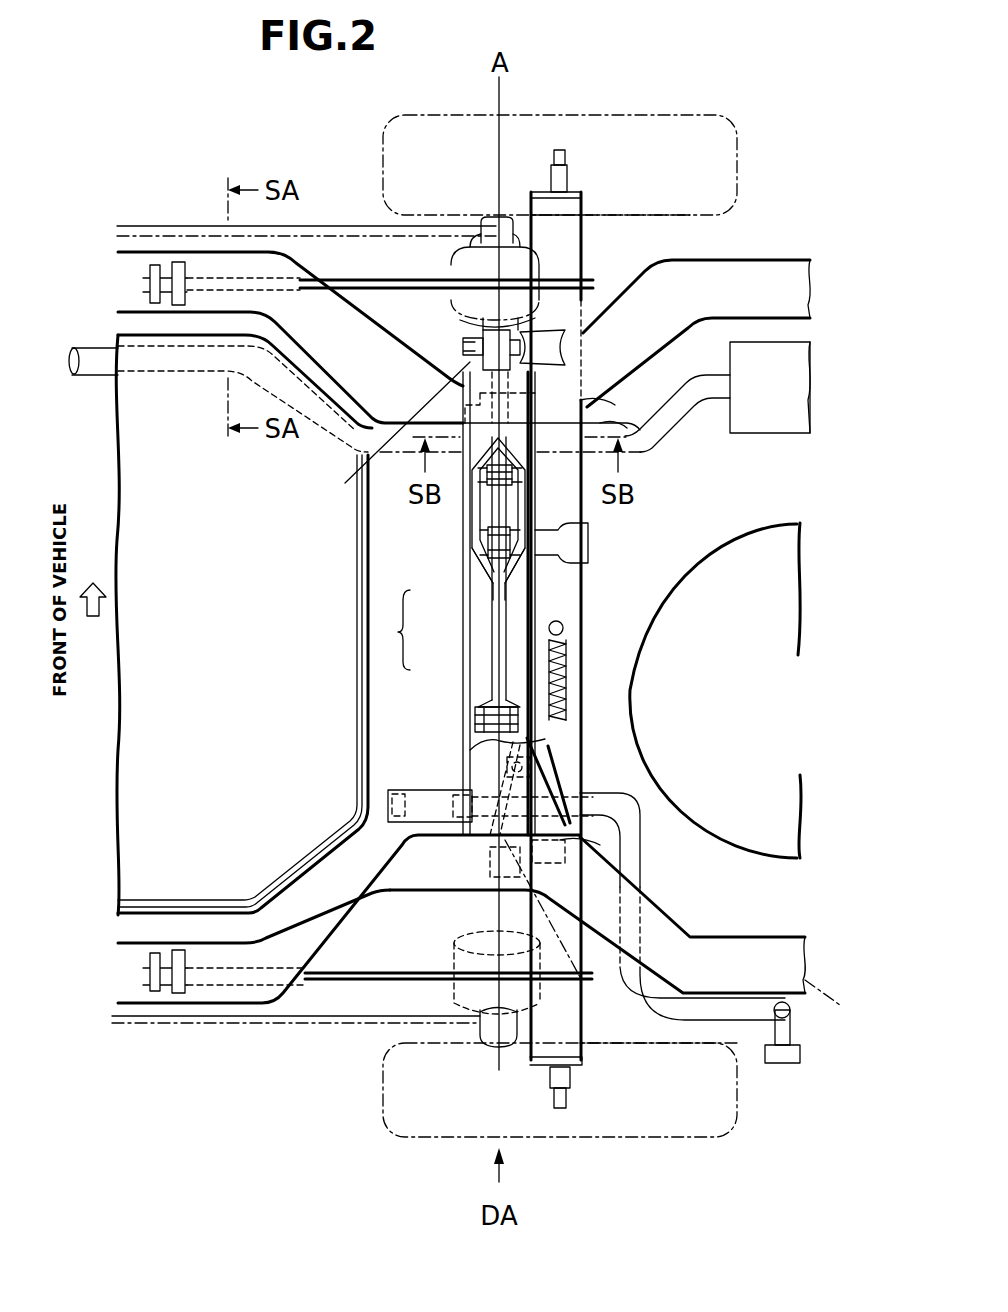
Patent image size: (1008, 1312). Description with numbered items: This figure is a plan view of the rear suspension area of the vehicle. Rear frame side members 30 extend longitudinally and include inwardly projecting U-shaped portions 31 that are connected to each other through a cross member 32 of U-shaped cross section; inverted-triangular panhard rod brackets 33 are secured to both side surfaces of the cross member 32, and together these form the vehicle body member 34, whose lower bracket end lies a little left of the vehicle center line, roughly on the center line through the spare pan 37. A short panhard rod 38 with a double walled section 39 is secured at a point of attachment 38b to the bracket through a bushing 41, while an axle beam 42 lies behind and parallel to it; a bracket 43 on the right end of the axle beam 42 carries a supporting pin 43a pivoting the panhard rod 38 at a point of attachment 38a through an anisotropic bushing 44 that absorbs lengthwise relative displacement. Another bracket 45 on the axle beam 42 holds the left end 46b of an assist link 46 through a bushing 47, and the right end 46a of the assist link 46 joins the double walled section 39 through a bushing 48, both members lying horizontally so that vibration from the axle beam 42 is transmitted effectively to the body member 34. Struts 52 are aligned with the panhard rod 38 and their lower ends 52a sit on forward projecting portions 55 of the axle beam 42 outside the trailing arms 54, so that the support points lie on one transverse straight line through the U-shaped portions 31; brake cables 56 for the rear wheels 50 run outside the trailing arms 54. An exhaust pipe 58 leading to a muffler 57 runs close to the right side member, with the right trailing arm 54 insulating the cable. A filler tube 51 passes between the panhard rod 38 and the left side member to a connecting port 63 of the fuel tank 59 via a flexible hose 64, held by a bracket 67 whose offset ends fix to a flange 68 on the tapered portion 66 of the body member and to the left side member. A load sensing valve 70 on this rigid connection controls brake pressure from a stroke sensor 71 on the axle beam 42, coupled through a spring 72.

The rear frame side member 30 is at (782, 260).
The U-shaped portion 31 is at (600, 403).
The cross member 32 is at (463, 640).
The panhard rod bracket 33 is at (463, 598).
The vehicle body member 34 is at (451, 521).
The spare pan 37 is at (727, 543).
The panhard rod 38 is at (488, 673).
The point of attachment to the axle beam 38a is at (480, 321).
The point of attachment 38b is at (478, 753).
The double walled section 39 is at (480, 546).
The bushing 41 is at (470, 726).
The axle beam 42 is at (584, 671).
The bracket 43 is at (590, 330).
The supporting pin 43a is at (462, 346).
The anisotropic bushing 44 is at (389, 437).
The bracket 45 is at (523, 536).
The assist link 46 is at (476, 518).
The right end of the assist link 46a is at (635, 440).
The left end of the assist link 46b is at (513, 566).
The bushing 47 is at (582, 543).
The bushing 48 is at (540, 483).
The rear wheel 50 is at (383, 150).
The filler tube 51 is at (640, 872).
The strut 52 is at (450, 268).
The lower end of the strut 52a is at (462, 213).
The trailing arm 54 is at (345, 280).
The forward projecting portion 55 is at (531, 205).
The brake cable 56 is at (157, 225).
The muffler 57 is at (792, 434).
The exhaust pipe 58 is at (700, 405).
The fuel tank 59 is at (136, 919).
The connecting port 63 is at (345, 830).
The flexible hose 64 is at (413, 836).
The tapered portion 66 is at (553, 783).
The bracket 67 is at (622, 815).
The flange 68 is at (550, 741).
The load sensing valve 70 is at (583, 980).
The stroke sensor 71 is at (565, 631).
The spring 72 is at (567, 702).